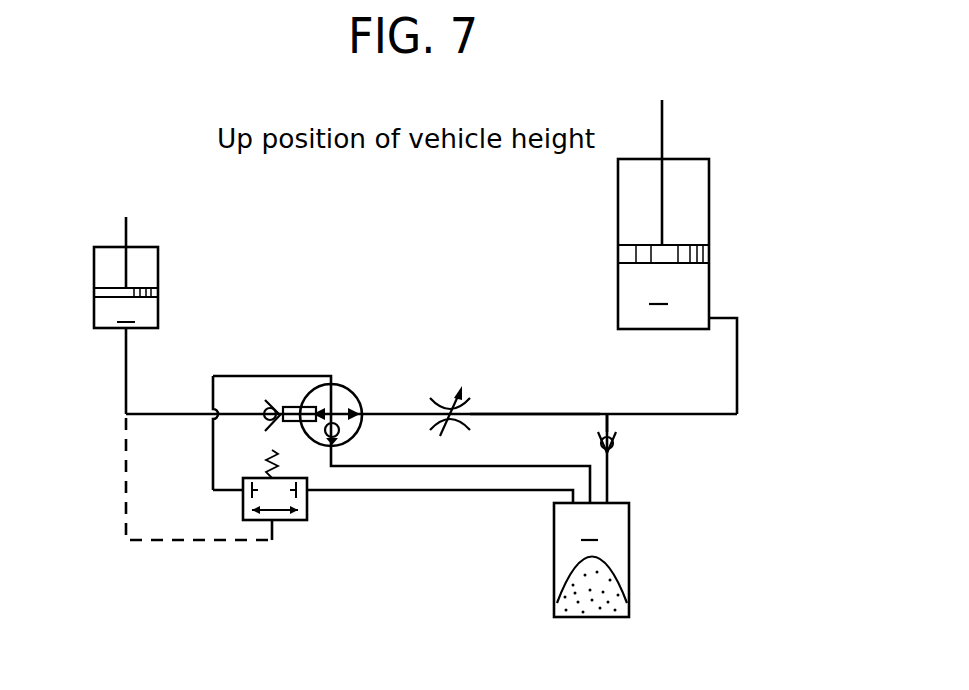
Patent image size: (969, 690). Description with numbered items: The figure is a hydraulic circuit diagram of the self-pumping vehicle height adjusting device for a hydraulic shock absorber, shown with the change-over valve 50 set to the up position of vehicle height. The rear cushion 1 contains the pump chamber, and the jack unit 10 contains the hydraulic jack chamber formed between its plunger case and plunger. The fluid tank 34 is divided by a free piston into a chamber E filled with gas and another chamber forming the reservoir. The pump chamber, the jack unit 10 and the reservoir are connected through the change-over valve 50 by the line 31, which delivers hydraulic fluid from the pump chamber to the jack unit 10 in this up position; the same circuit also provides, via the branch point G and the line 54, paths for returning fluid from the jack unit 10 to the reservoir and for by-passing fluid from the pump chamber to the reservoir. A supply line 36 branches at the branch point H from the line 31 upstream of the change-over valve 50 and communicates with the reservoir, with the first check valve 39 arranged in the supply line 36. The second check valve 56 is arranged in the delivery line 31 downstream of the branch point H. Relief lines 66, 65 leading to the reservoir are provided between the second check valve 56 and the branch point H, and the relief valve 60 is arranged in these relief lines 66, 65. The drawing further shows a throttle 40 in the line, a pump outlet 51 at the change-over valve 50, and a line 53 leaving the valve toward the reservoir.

The rear cushion 1 is at (712, 238).
The jack unit 10 is at (92, 283).
The line 31 is at (124, 381).
The fluid tank 34 is at (627, 560).
The supply line 36 is at (608, 488).
The first check valve 39 is at (618, 454).
The variable throttle 40 is at (452, 396).
The change-over valve 50 is at (346, 375).
The pump outlet 51 is at (361, 392).
The suction line 53 is at (340, 440).
The line 54 is at (505, 452).
The second check valve 56 is at (265, 402).
The relief valve 60 is at (287, 530).
The relief line 65 is at (436, 490).
The relief line 66 is at (292, 375).
The branch point G is at (345, 426).
The branch point H is at (613, 426).
The chamber E is at (612, 600).